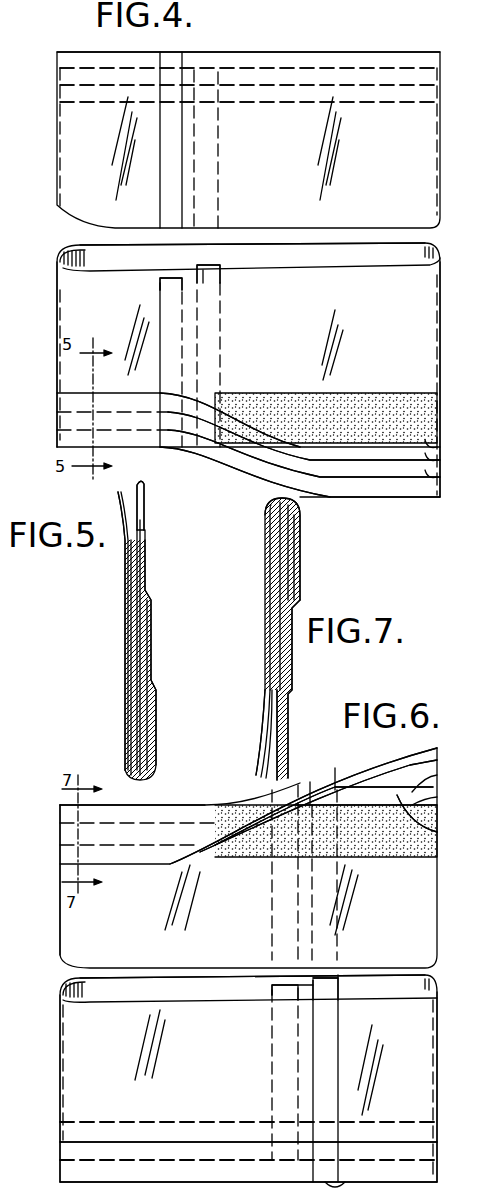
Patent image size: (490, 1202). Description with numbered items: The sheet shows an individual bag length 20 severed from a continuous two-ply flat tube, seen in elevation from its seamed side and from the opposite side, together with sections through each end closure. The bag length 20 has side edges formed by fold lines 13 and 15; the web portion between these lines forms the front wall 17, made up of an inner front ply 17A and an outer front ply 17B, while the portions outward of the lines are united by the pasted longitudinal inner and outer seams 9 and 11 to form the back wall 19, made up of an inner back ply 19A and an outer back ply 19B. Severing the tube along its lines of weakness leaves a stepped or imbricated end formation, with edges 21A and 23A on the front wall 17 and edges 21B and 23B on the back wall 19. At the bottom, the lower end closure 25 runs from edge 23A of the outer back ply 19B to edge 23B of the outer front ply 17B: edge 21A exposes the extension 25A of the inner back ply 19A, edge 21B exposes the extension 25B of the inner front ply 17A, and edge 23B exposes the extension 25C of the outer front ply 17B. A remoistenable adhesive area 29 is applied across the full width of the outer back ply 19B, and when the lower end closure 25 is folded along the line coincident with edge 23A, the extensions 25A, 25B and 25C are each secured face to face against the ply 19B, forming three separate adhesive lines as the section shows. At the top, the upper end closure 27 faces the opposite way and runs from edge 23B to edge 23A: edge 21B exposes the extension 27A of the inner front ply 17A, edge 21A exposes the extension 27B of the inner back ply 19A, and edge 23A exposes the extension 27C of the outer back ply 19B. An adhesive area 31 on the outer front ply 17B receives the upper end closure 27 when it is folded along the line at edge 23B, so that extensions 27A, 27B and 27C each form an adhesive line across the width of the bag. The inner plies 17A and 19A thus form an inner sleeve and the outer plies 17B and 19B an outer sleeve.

In FIG. 4, the inner longitudinal seam 9 is at (215, 266).
In FIG. 6, the inner longitudinal seam 9 is at (322, 976).
In FIG. 4, the outer longitudinal seam 11 is at (162, 287).
In FIG. 6, the outer longitudinal seam 11 is at (330, 962).
In FIG. 4, the fold line 13 is at (57, 291).
In FIG. 5, the fold line 13 is at (8, 689).
In FIG. 6, the fold line 13 is at (440, 1012).
In FIG. 4, the fold line 15 is at (441, 303).
In FIG. 6, the fold line 15 is at (60, 1046).
In FIG. 4, the front wall 17 is at (285, 251).
In FIG. 5, the front wall 17 is at (111, 494).
In FIG. 7, the front wall 17 is at (270, 786).
In FIG. 6, the front wall 17 is at (221, 914).
In FIG. 4, the inner front ply 17A is at (145, 248).
In FIG. 5, the inner front ply 17A is at (128, 606).
In FIG. 7, the inner front ply 17A is at (270, 710).
In FIG. 6, the inner front ply 17A is at (184, 995).
In FIG. 4, the outer front ply 17B is at (278, 245).
In FIG. 5, the outer front ply 17B is at (125, 578).
In FIG. 7, the outer front ply 17B is at (270, 665).
In FIG. 6, the outer front ply 17B is at (137, 1002).
In FIG. 4, the back wall 19 is at (100, 190).
In FIG. 5, the back wall 19 is at (139, 488).
In FIG. 7, the back wall 19 is at (248, 773).
In FIG. 6, the back wall 19 is at (180, 967).
In FIG. 4, the inner back ply 19A is at (248, 276).
In FIG. 5, the inner back ply 19A is at (140, 534).
In FIG. 7, the inner back ply 19A is at (270, 683).
In FIG. 6, the inner back ply 19A is at (9, 1154).
In FIG. 4, the outer back ply 19B is at (327, 278).
In FIG. 5, the outer back ply 19B is at (148, 570).
In FIG. 7, the outer back ply 19B is at (262, 745).
In FIG. 6, the outer back ply 19B is at (9, 1182).
In FIG. 4, the bag length 20 is at (53, 186).
In FIG. 6, the bag length 20 is at (56, 936).
In FIG. 4, the edge 21A is at (318, 66).
In FIG. 6, the edge 21A is at (358, 1140).
In FIG. 4, the edge 21B is at (276, 86).
In FIG. 6, the edge 21B is at (345, 1160).
In FIG. 4, the edge 23A is at (345, 52).
In FIG. 6, the edge 23A is at (410, 756).
In FIG. 4, the edge 23B is at (349, 103).
In FIG. 6, the edge 23B is at (345, 1181).
In FIG. 4, the lower end closure 25 is at (173, 432).
In FIG. 5, the lower end closure 25 is at (159, 656).
In FIG. 6, the lower end closure 25 is at (58, 1135).
In FIG. 4, the extension 25A is at (278, 472).
In FIG. 5, the extension 25A is at (150, 731).
In FIG. 4, the extension 25B is at (328, 476).
In FIG. 5, the extension 25B is at (148, 633).
In FIG. 4, the extension 25C is at (381, 483).
In FIG. 5, the extension 25C is at (145, 548).
In FIG. 4, the upper end closure 27 is at (85, 44).
In FIG. 7, the upper end closure 27 is at (309, 607).
In FIG. 6, the upper end closure 27 is at (158, 804).
In FIG. 7, the extension 27A is at (284, 563).
In FIG. 6, the extension 27A is at (436, 823).
In FIG. 7, the extension 27B is at (290, 648).
In FIG. 6, the extension 27B is at (355, 780).
In FIG. 7, the extension 27C is at (290, 735).
In FIG. 6, the extension 27C is at (392, 762).
In FIG. 4, the adhesive area 29 is at (336, 412).
In FIG. 5, the adhesive area 29 is at (160, 694).
In FIG. 7, the adhesive area 31 is at (290, 694).
In FIG. 6, the adhesive area 31 is at (352, 842).